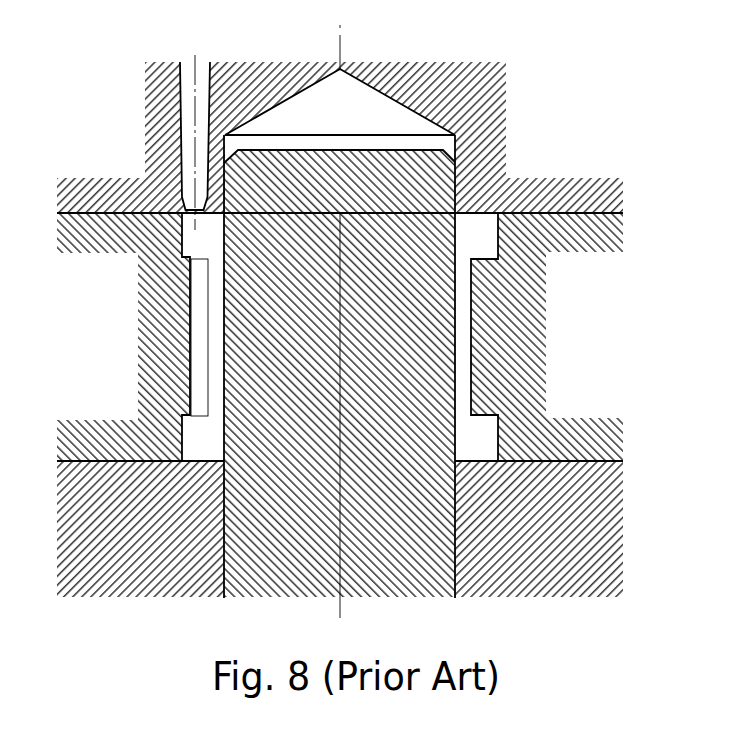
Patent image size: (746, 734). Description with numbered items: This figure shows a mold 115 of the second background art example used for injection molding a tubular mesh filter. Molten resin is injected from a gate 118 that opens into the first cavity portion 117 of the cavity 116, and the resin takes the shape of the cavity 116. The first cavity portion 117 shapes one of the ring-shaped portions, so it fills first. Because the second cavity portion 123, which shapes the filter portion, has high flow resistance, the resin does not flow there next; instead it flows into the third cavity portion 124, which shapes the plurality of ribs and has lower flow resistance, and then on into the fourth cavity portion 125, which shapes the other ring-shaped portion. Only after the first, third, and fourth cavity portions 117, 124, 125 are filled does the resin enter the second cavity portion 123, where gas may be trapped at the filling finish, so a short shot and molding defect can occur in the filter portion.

The mold 115 is at (596, 155).
The cavity 116 is at (497, 212).
The first cavity portion 117 is at (187, 238).
The gate 118 is at (185, 208).
The second cavity portion 123 is at (472, 334).
The third cavity portion 124 is at (188, 308).
The fourth cavity portion 125 is at (190, 447).